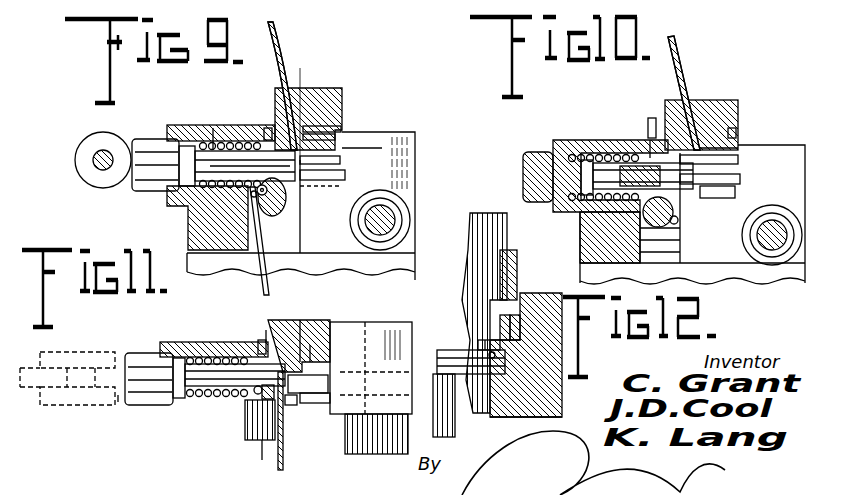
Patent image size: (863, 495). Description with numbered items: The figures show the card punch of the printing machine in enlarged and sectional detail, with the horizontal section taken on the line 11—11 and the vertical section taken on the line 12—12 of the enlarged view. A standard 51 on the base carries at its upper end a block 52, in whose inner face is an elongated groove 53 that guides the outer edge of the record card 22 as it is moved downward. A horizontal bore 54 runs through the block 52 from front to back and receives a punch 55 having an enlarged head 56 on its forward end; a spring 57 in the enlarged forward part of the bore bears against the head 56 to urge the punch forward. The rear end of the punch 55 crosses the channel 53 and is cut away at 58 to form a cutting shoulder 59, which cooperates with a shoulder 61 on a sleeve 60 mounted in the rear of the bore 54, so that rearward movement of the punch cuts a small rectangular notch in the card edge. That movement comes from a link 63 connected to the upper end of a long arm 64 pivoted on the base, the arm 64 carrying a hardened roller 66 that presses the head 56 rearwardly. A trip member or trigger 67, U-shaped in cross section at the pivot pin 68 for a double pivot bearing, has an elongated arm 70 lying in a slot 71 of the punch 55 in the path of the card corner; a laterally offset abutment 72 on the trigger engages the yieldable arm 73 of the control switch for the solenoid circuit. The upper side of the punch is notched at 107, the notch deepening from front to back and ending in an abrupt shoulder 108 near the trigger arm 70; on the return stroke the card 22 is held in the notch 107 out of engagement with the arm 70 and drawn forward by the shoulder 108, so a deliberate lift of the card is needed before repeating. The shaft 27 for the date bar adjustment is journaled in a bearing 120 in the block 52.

In FIG. 9, the standards 11 is at (130, 163).
In FIG. 9, the section line 12— 12 is at (308, 84).
In FIG. 9, the record card 22 is at (288, 54).
In FIG. 10, the record card 22 is at (690, 72).
In FIG. 11, the record card 22 is at (284, 466).
In FIG. 12, the record card 22 is at (495, 235).
In FIG. 9, the shaft 27 is at (393, 222).
In FIG. 10, the shaft 27 is at (757, 238).
In FIG. 9, the standard 51 is at (402, 275).
In FIG. 10, the standard 51 is at (790, 280).
In FIG. 11, the standard 51 is at (371, 388).
In FIG. 9, the block 52 is at (188, 229).
In FIG. 10, the block 52 is at (580, 245).
In FIG. 11, the block 52 is at (285, 325).
In FIG. 12, the block 52 is at (515, 410).
In FIG. 9, the groove 53 is at (342, 105).
In FIG. 10, the groove 53 is at (712, 110).
In FIG. 11, the groove 53 is at (320, 380).
In FIG. 12, the groove 53 is at (508, 275).
In FIG. 9, the bore 54 is at (180, 128).
In FIG. 10, the bore 54 is at (552, 210).
In FIG. 11, the bore 54 is at (212, 345).
In FIG. 12, the bore 54 is at (562, 385).
In FIG. 9, the punch 55 is at (248, 152).
In FIG. 10, the punch 55 is at (620, 157).
In FIG. 11, the punch 55 is at (195, 400).
In FIG. 12, the punch 55 is at (518, 335).
In FIG. 9, the head 56 is at (148, 146).
In FIG. 10, the head 56 is at (546, 156).
In FIG. 11, the head 56 is at (143, 355).
In FIG. 9, the spring 57 is at (205, 146).
In FIG. 10, the spring 57 is at (590, 154).
In FIG. 11, the spring 57 is at (210, 405).
In FIG. 9, the cut-away portion 58 is at (345, 152).
In FIG. 10, the cut-away portion 58 is at (700, 176).
In FIG. 9, the cutting shoulder 59 is at (305, 140).
In FIG. 10, the cutting shoulder 59 is at (740, 148).
In FIG. 11, the cutting shoulder 59 is at (300, 320).
In FIG. 12, the cutting shoulder 59 is at (508, 323).
In FIG. 9, the sleeve 60 is at (290, 206).
In FIG. 11, the sleeve 60 is at (313, 405).
In FIG. 9, the shoulder 61 is at (305, 145).
In FIG. 10, the shoulder 61 is at (700, 198).
In FIG. 11, the link 63 is at (22, 392).
In FIG. 11, the arm 64 is at (70, 352).
In FIG. 9, the hardened roller 66 is at (78, 176).
In FIG. 11, the hardened roller 66 is at (118, 403).
In FIG. 9, the trip member or trigger 67 is at (310, 177).
In FIG. 10, the trip member or trigger 67 is at (705, 183).
In FIG. 9, the pivot pin 68 is at (252, 194).
In FIG. 10, the pivot pin 68 is at (643, 212).
In FIG. 11, the pivot pin 68 is at (252, 422).
In FIG. 12, the pivot pin 68 is at (489, 354).
In FIG. 9, the trigger arm 70 is at (305, 161).
In FIG. 10, the trigger arm 70 is at (700, 166).
In FIG. 11, the trigger arm 70 is at (289, 406).
In FIG. 12, the trigger arm 70 is at (488, 340).
In FIG. 9, the slot 71 is at (213, 128).
In FIG. 10, the slot 71 is at (648, 140).
In FIG. 11, the slot 71 is at (312, 345).
In FIG. 12, the slot 71 is at (486, 346).
In FIG. 9, the abutment 72 is at (282, 216).
In FIG. 10, the abutment 72 is at (677, 220).
In FIG. 11, the abutment 72 is at (263, 460).
In FIG. 12, the abutment 72 is at (470, 352).
In FIG. 9, the switch arm 73 is at (256, 292).
In FIG. 11, the switch arm 73 is at (245, 452).
In FIG. 12, the switch arm 73 is at (455, 432).
In FIG. 9, the notch 107 is at (266, 126).
In FIG. 10, the notch 107 is at (652, 134).
In FIG. 11, the notch 107 is at (262, 340).
In FIG. 10, the shoulder 108 is at (738, 134).
In FIG. 11, the shoulder 108 is at (265, 330).
In FIG. 9, the bearing 120 is at (411, 229).
In FIG. 10, the bearing 120 is at (791, 218).